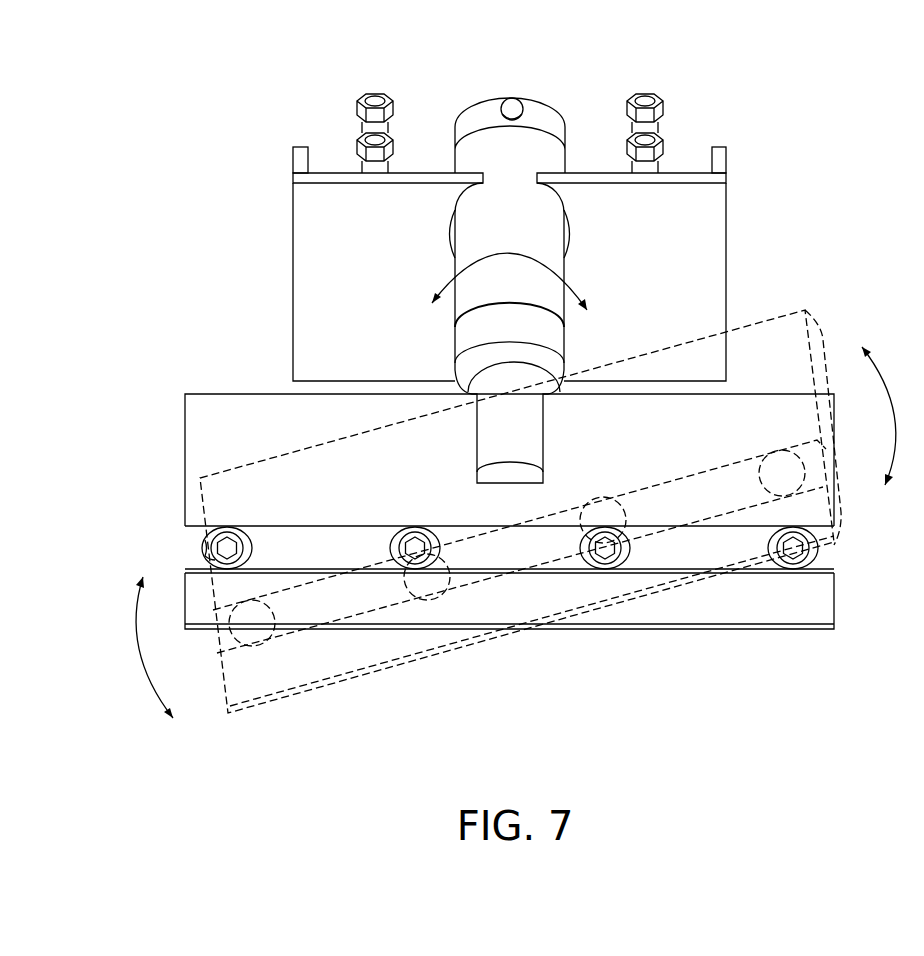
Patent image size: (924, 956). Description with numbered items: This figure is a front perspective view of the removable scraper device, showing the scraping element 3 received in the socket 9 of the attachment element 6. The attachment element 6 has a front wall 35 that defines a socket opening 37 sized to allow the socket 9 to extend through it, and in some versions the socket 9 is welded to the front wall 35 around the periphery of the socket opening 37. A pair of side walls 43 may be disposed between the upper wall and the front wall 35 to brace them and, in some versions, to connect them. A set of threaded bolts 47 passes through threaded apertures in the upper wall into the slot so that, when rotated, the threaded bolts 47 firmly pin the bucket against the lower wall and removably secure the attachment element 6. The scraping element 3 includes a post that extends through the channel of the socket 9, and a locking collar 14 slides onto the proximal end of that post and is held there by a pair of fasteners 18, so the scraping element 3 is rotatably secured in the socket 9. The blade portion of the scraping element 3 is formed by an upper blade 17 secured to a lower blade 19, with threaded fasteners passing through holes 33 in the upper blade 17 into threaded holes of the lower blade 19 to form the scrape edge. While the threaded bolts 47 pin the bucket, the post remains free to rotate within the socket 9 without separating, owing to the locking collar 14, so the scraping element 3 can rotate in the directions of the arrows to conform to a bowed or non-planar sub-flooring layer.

The scraping element 3 is at (513, 514).
The attachment element 6 is at (250, 172).
The socket 9 is at (553, 290).
The locking collar 14 is at (547, 120).
The upper blade 17 is at (817, 606).
The fasteners 18 is at (512, 106).
The lower blade 19 is at (200, 408).
The holes 33 is at (813, 563).
The front wall 35 is at (310, 262).
The socket opening 37 is at (563, 225).
The side walls 43 is at (300, 158).
The threaded bolts 47 is at (357, 147).